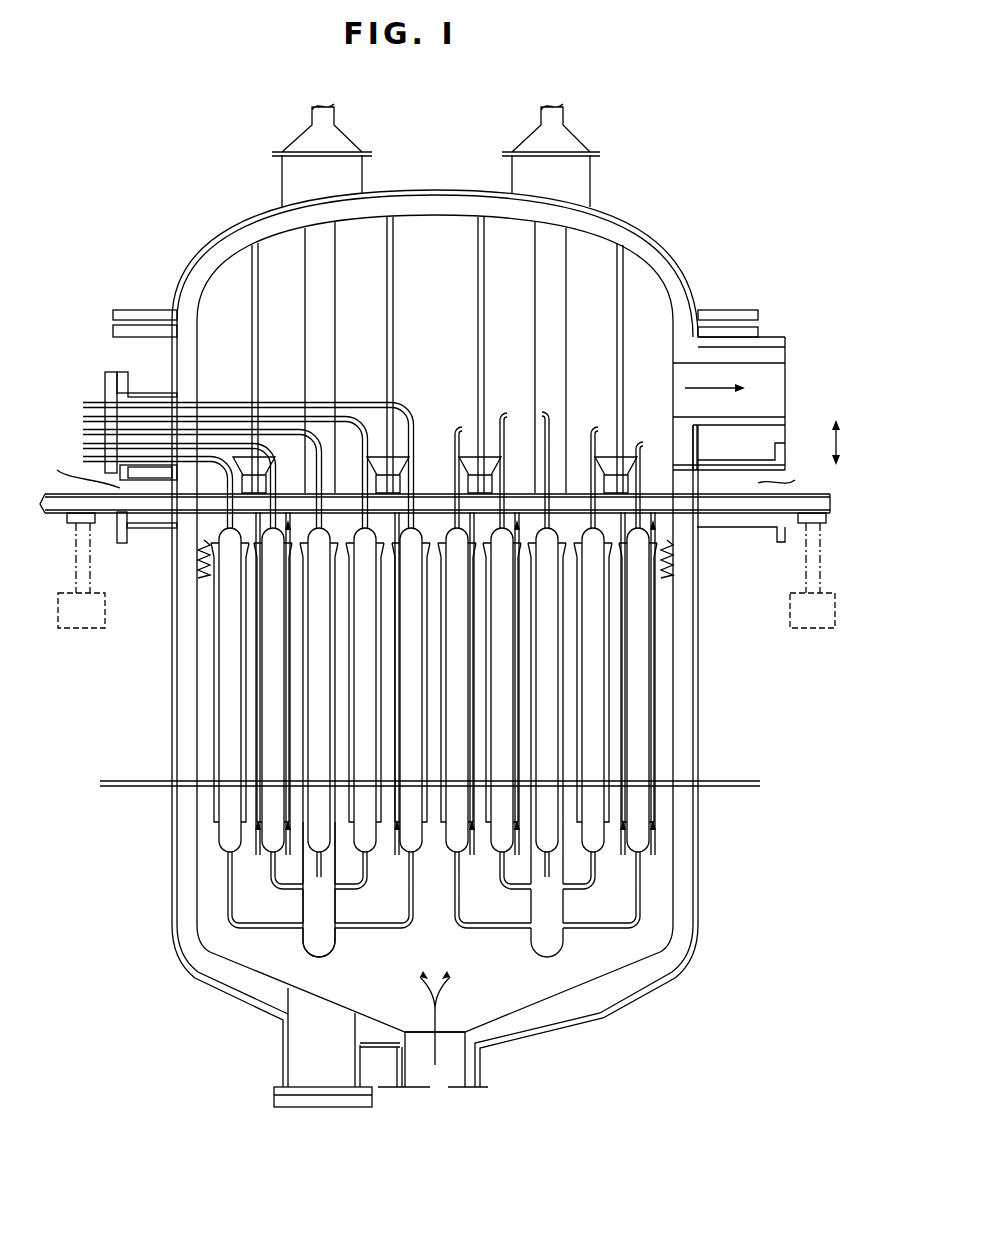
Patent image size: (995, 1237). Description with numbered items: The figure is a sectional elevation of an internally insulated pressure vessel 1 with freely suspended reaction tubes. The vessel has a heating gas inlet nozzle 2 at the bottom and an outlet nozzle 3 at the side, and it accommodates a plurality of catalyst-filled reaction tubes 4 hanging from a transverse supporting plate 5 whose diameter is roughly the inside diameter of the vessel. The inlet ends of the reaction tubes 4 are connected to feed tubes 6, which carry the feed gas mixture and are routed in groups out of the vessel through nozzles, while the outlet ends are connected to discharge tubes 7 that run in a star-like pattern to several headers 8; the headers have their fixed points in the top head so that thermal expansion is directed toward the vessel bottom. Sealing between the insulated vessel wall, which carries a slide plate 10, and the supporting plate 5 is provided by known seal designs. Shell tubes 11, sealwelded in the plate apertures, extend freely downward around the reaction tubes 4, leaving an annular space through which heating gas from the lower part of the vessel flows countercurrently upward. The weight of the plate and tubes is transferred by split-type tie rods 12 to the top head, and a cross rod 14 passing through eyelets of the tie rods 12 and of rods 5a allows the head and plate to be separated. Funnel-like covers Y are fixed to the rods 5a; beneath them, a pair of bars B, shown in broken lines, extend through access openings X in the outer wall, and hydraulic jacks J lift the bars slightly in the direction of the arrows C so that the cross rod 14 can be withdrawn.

The pressure vessel 1 is at (700, 722).
The heating gas inlet nozzle 2 is at (441, 1075).
The outlet nozzle 3 is at (770, 388).
The reaction tubes 4 is at (638, 838).
The supporting plate 5 is at (205, 549).
The rods 5a is at (617, 530).
The feed tubes 6 is at (460, 430).
The discharge tubes 7 is at (497, 887).
The headers 8 is at (317, 942).
The slide plate 10 is at (672, 598).
The shell tubes 11 is at (397, 824).
The tie rods 12 is at (392, 292).
The cross rod 14 is at (432, 490).
The access openings X is at (432, 467).
The funnel-like covers Y is at (608, 465).
The bars B is at (838, 540).
The arrows C is at (840, 425).
The hydraulic jacks J is at (862, 627).